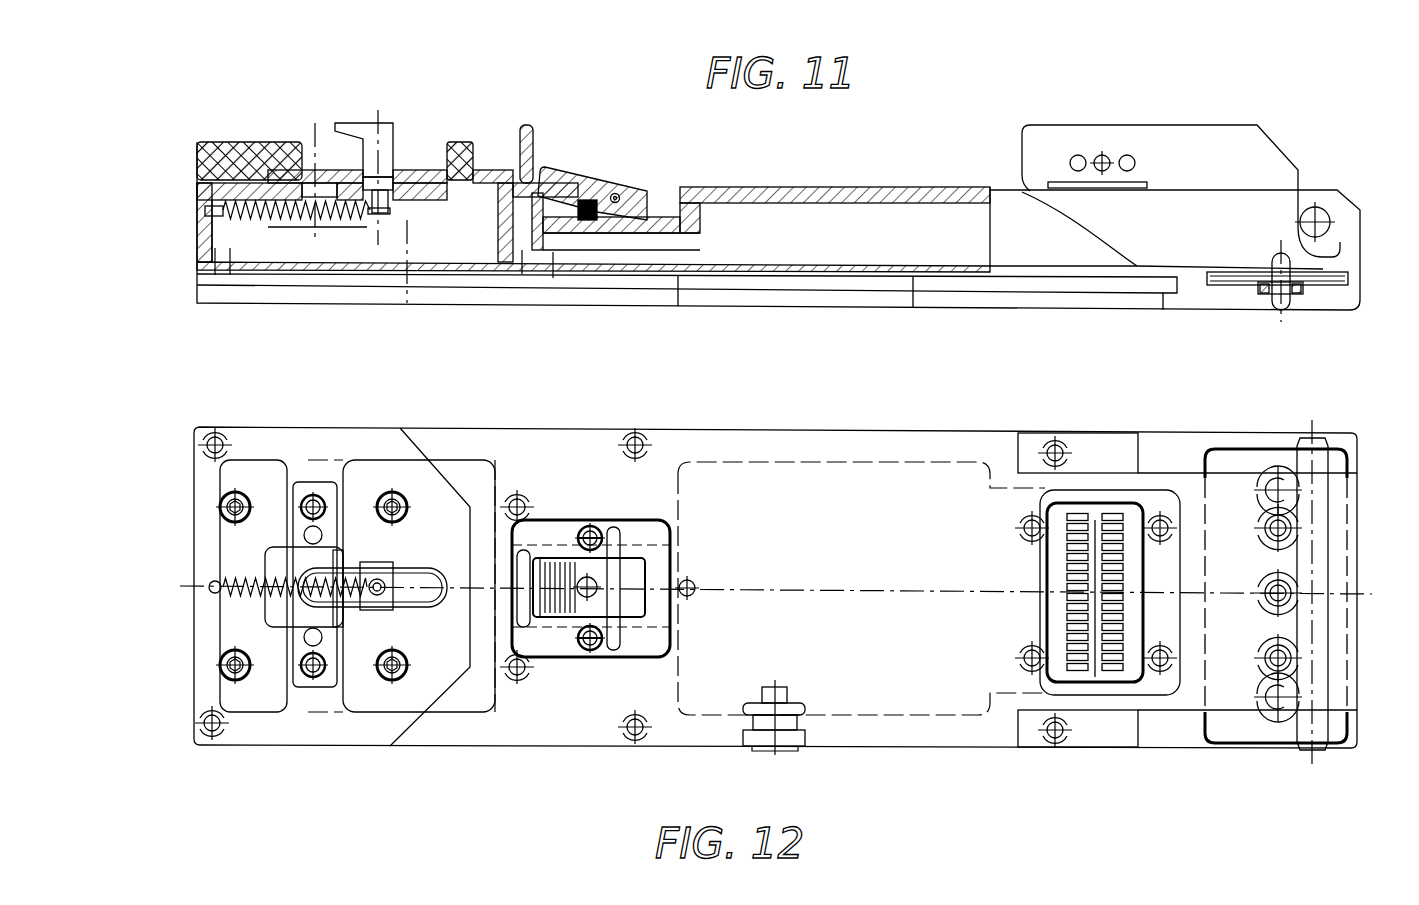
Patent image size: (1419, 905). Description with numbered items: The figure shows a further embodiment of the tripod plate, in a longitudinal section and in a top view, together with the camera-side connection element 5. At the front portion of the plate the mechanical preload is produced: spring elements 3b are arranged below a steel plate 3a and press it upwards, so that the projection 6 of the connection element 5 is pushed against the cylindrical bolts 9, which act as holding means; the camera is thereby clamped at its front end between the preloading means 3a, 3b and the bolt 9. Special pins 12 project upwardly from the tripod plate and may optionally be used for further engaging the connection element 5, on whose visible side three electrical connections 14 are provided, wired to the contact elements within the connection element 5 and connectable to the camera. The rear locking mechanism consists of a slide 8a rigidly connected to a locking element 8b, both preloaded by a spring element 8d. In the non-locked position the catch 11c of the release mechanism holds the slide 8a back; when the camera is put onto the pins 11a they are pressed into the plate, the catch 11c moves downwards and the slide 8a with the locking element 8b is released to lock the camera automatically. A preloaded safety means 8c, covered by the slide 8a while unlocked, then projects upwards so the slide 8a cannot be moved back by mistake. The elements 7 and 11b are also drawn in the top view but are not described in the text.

In FIG. 11, the steel plate 3a is at (1347, 280).
In FIG. 12, the steel plate 3a is at (1228, 455).
In FIG. 11, the spring elements 3b is at (1297, 295).
In FIG. 11, the connection element 5 is at (1272, 197).
In FIG. 11, the projection 6 is at (1322, 255).
In FIG. 12, the plug connector 7 is at (1110, 672).
In FIG. 11, the slide 8a is at (528, 137).
In FIG. 12, the slide 8a is at (523, 552).
In FIG. 11, the locking element 8b is at (380, 128).
In FIG. 12, the locking element 8b is at (393, 607).
In FIG. 11, the safety means 8c is at (597, 182).
In FIG. 12, the safety means 8c is at (647, 567).
In FIG. 11, the spring element 8d is at (208, 212).
In FIG. 12, the spring element 8d is at (210, 587).
In FIG. 11, the cylindrical bolt 9 is at (1317, 220).
In FIG. 12, the cylindrical bolt 9 is at (1311, 440).
In FIG. 12, the pins 11a is at (323, 675).
In FIG. 12, the fastening screw 11b is at (316, 506).
In FIG. 12, the catch 11c is at (305, 534).
In FIG. 11, the special pins 12 is at (1277, 257).
In FIG. 11, the electrical connections 14 is at (1129, 157).